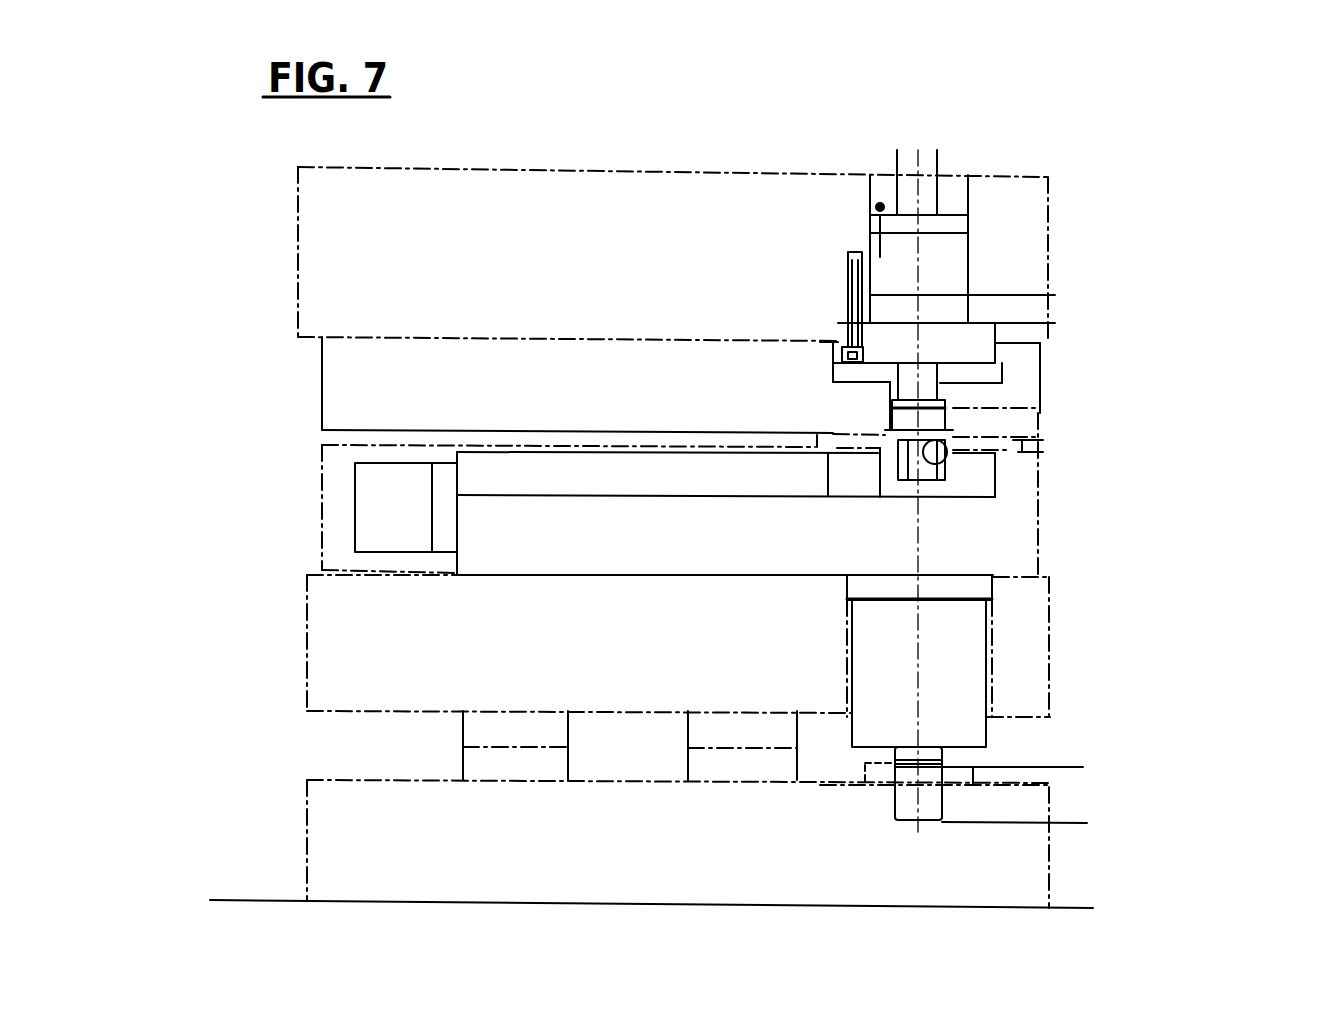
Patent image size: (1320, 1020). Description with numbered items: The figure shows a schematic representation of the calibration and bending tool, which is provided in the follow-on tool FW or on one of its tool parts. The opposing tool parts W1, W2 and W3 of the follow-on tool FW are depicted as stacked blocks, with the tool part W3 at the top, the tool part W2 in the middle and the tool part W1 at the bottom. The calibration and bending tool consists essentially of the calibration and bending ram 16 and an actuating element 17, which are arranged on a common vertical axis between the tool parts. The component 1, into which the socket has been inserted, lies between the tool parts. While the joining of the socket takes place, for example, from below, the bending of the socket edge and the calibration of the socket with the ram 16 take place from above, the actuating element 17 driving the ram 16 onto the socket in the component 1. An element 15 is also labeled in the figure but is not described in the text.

The follow-on tool FW is at (627, 158).
The tool part W3 is at (333, 247).
The tool part W2 is at (340, 636).
The tool part W1 is at (1013, 872).
The actuating element 17 is at (998, 211).
The holder flange 15 is at (1030, 280).
The calibration and bending ram 16 is at (955, 412).
The component 1 is at (746, 507).